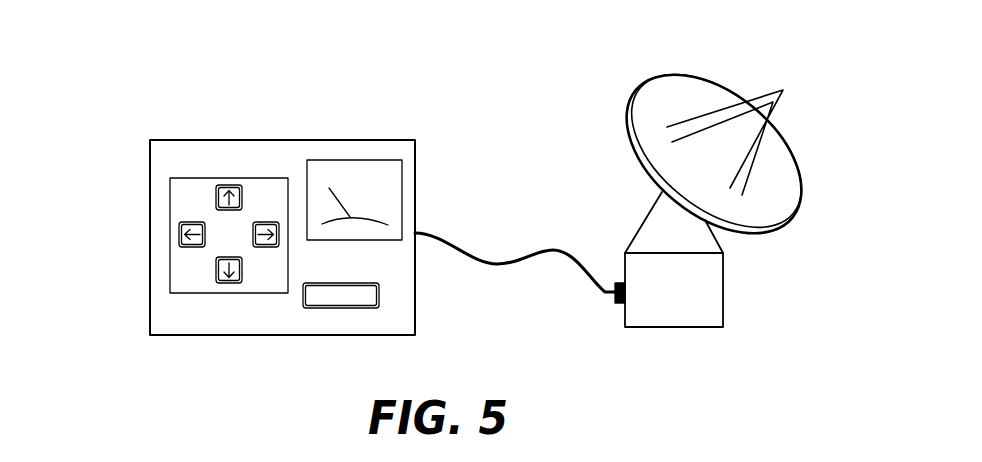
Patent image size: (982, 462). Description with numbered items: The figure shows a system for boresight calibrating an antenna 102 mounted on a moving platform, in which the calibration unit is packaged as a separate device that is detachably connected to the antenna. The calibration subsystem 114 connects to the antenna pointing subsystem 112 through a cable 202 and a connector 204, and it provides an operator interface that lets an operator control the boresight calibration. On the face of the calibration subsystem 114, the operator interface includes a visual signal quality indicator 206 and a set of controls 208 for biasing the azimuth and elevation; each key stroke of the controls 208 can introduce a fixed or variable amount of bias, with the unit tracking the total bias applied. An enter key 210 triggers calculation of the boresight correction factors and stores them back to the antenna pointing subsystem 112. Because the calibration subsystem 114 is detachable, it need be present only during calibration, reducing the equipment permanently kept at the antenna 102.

The antenna 102 is at (630, 102).
The antenna pointing subsystem 112 is at (723, 295).
The calibration subsystem 114 is at (163, 138).
The cable 202 is at (495, 258).
The connector 204 is at (617, 281).
The visual signal quality indicator 206 is at (373, 160).
The controls 208 is at (228, 294).
The enter key 210 is at (352, 308).